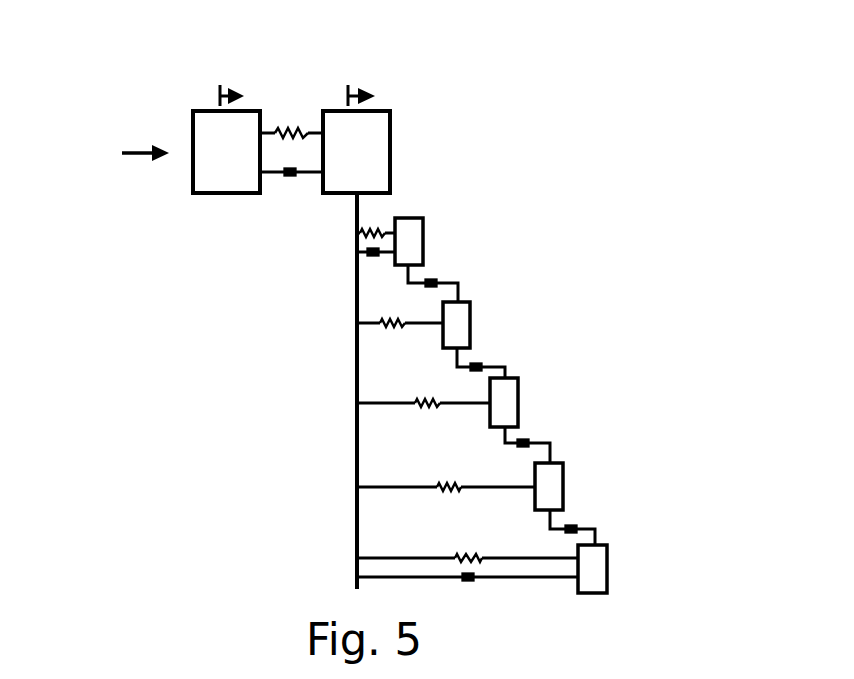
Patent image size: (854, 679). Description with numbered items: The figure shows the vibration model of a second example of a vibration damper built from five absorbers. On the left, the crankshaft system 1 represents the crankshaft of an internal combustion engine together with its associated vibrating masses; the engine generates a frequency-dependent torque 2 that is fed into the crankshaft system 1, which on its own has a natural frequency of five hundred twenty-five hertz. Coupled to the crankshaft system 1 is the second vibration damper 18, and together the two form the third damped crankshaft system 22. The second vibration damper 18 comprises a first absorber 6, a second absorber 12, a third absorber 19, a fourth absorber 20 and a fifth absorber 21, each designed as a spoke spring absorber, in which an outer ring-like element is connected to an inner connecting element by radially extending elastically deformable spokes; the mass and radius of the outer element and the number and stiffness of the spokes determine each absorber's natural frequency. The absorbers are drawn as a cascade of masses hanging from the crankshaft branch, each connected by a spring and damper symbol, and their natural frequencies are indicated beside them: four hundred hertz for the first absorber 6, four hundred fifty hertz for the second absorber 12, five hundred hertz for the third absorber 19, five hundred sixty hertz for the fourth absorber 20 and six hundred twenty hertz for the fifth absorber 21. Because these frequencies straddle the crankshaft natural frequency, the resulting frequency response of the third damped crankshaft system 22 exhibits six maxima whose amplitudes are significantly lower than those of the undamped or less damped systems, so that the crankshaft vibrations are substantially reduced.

The crankshaft system 1 is at (218, 194).
The torque 2 is at (128, 157).
The first absorber 6 is at (425, 243).
The second absorber 12 is at (472, 318).
The second vibration damper 18 is at (392, 136).
The third absorber 19 is at (520, 393).
The fourth absorber 20 is at (565, 477).
The fifth absorber 21 is at (609, 562).
The third damped crankshaft system 22 is at (289, 88).